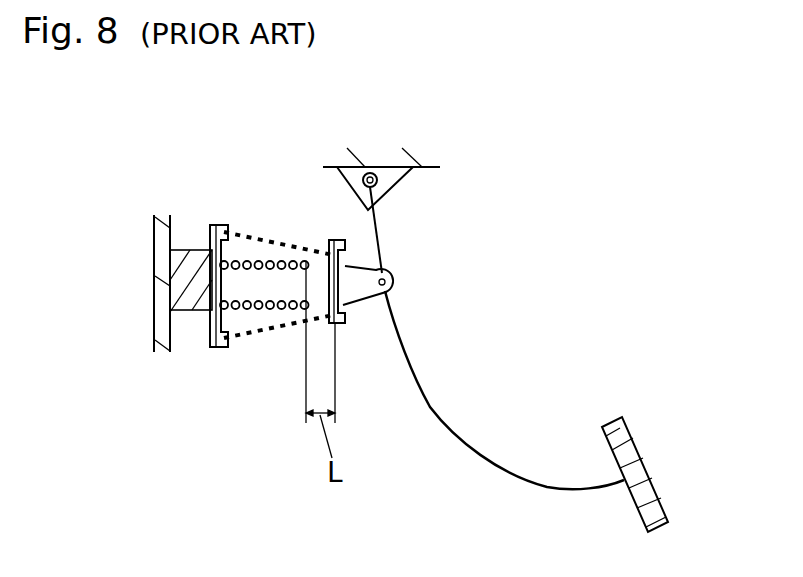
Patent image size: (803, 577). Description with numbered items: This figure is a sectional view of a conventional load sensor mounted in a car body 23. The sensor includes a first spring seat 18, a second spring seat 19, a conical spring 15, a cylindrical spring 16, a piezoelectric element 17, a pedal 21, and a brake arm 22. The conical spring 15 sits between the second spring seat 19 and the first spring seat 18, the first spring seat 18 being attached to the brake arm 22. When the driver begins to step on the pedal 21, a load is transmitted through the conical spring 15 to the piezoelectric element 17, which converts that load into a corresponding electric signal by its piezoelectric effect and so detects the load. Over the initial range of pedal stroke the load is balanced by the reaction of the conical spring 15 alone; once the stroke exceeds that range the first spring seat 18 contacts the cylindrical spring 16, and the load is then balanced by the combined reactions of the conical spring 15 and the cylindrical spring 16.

The conical spring 15 is at (278, 248).
The cylindrical spring 16 is at (268, 305).
The piezoelectric element 17 is at (193, 250).
The first spring seat 18 is at (363, 277).
The second spring seat 19 is at (217, 225).
The pedal 21 is at (640, 452).
The brake arm 22 is at (433, 403).
The car body 23 is at (160, 295).